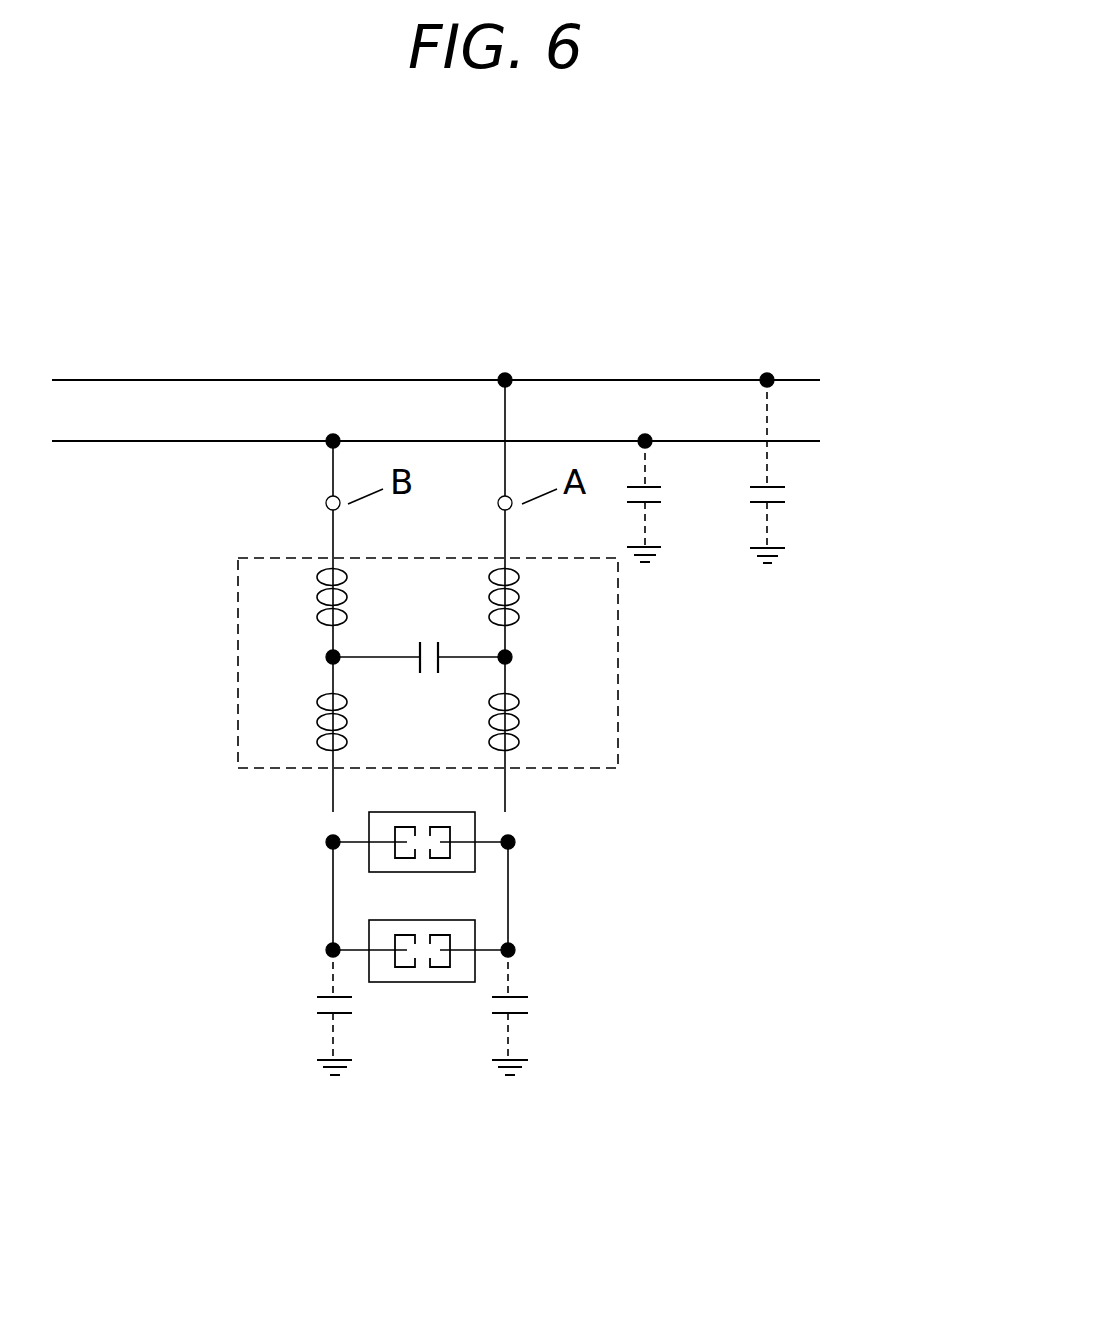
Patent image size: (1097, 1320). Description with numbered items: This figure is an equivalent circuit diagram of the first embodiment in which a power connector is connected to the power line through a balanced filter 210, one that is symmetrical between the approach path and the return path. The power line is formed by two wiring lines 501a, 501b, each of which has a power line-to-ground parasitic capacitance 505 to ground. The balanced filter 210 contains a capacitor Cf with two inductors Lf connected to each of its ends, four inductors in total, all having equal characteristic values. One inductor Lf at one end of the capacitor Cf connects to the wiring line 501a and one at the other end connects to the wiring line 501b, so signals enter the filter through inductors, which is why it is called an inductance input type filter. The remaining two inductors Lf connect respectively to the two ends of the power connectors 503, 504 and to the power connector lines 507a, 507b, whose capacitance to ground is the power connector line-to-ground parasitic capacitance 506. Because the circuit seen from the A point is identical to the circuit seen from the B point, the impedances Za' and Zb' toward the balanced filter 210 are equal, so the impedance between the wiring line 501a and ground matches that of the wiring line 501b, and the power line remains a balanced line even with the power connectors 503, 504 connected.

The wiring line 501a is at (501, 378).
The wiring line 501b is at (501, 441).
The power connector line 507a is at (331, 476).
The power connector line 507b is at (503, 415).
The balanced filter 210 is at (238, 582).
The power connector 503 is at (369, 830).
The power connector 504 is at (372, 935).
The power line-to-ground parasitic capacitance 505 is at (652, 506).
The power connector line-to-ground parasitic capacitance 506 is at (343, 1018).